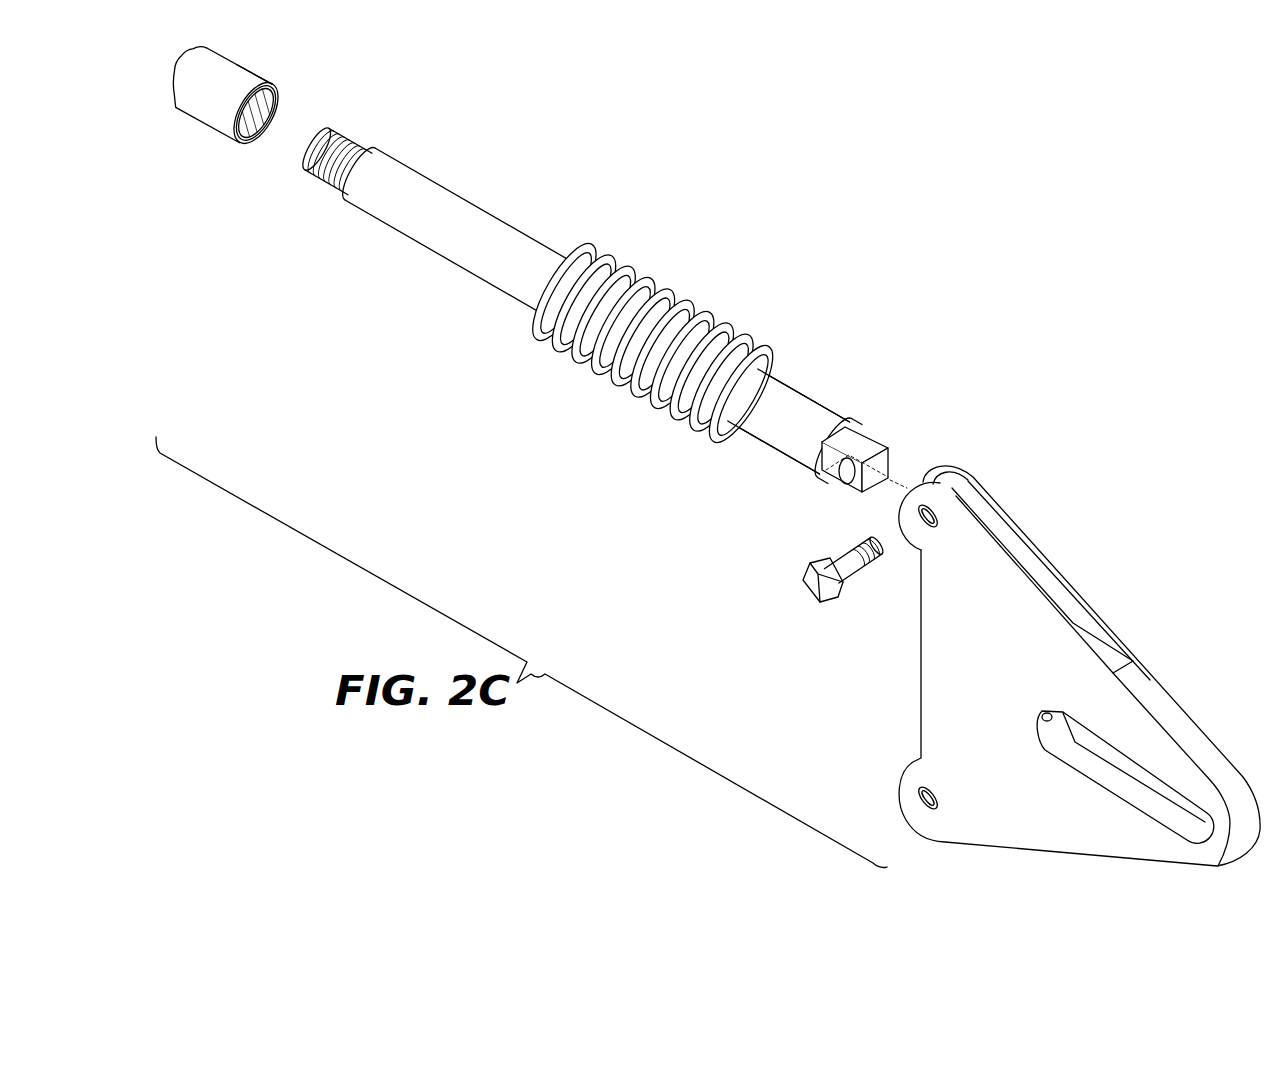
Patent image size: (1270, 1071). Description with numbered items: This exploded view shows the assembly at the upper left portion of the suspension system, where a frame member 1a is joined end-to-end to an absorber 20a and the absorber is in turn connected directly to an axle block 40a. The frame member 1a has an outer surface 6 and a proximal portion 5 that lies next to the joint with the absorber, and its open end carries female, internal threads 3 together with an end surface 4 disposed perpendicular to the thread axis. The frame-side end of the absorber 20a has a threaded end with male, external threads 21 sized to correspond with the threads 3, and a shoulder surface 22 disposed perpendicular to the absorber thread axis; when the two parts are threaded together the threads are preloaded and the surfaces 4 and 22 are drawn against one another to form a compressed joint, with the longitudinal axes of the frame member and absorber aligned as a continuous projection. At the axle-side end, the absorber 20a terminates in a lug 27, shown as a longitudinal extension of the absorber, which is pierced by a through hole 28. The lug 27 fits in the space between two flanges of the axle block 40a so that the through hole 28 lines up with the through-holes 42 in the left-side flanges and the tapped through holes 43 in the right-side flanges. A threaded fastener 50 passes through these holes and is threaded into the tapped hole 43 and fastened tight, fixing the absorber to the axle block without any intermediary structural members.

The frame member 1a is at (203, 103).
The female threads 3 is at (252, 130).
The end surface 4 is at (279, 92).
The proximal portion 5 is at (248, 75).
The outer surface 6 is at (214, 53).
The shoulder surface 22 is at (375, 147).
The male threads 21 is at (318, 176).
The absorber 20a is at (667, 302).
The lug 27 is at (866, 443).
The through hole 28 is at (847, 472).
The threaded fastener 50 is at (817, 587).
The axle block 40a is at (1170, 703).
The through-holes 42 is at (925, 528).
The tapped through holes 43 is at (957, 495).